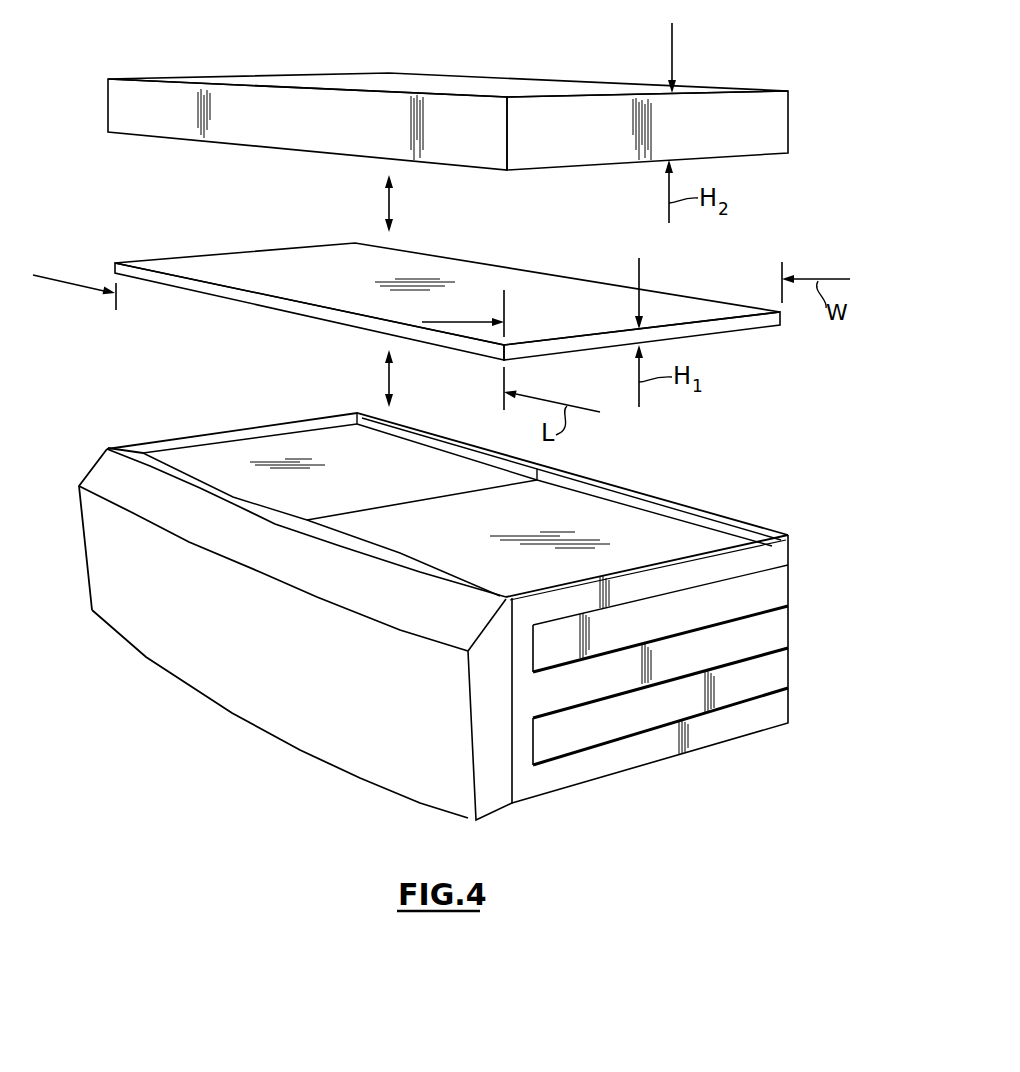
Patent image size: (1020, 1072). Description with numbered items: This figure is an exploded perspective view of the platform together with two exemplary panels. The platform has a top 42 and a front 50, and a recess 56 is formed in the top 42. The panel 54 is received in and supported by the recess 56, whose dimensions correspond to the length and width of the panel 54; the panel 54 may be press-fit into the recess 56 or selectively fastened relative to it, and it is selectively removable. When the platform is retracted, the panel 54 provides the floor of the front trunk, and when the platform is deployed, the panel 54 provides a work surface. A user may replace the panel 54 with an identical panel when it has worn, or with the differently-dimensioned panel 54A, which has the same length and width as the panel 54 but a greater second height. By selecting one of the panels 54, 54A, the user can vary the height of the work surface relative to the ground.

The top 42 is at (742, 516).
The front 50 is at (221, 683).
The panel 54 is at (713, 300).
The panel 54A is at (789, 117).
The recess 56 is at (640, 525).